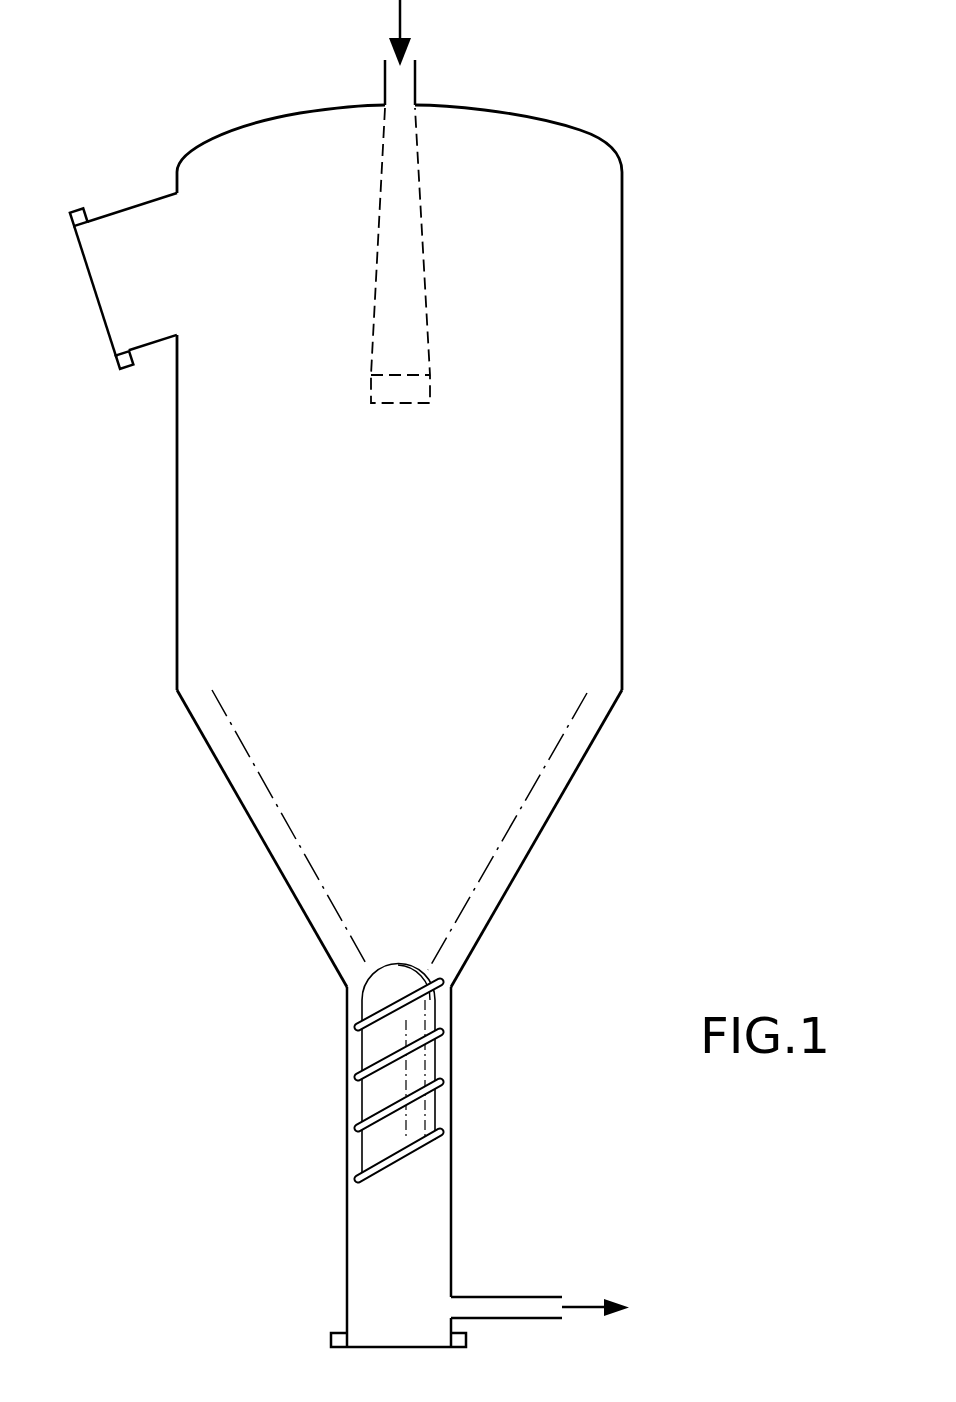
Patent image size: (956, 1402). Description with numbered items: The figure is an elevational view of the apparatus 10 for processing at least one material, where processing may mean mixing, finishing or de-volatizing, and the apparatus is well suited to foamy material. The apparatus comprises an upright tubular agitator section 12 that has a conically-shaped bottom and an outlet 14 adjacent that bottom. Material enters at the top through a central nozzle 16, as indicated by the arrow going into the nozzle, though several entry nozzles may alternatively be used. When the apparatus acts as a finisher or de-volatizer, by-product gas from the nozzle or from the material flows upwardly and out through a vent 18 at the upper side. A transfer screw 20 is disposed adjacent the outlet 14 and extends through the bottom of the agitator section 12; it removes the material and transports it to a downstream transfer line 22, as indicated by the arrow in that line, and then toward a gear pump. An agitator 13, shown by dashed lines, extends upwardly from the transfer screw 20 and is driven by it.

The apparatus 10 is at (680, 153).
The agitator section 12 is at (250, 822).
The agitator 13 is at (322, 880).
The outlet 14 is at (360, 990).
The central nozzle 16 is at (415, 78).
The vent 18 is at (145, 200).
The transfer screw 20 is at (440, 1068).
The transfer line 22 is at (507, 1295).